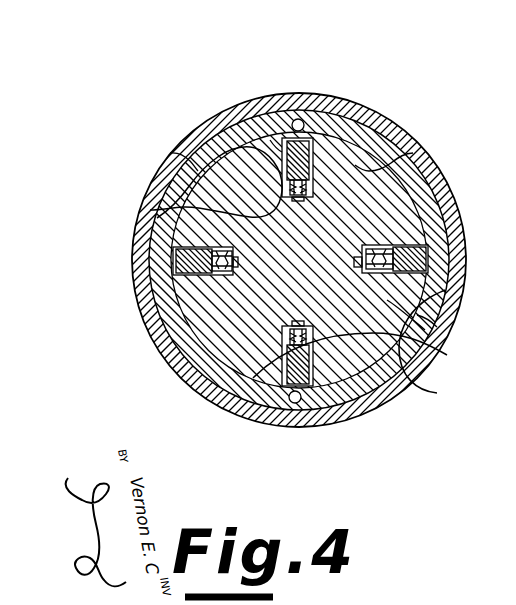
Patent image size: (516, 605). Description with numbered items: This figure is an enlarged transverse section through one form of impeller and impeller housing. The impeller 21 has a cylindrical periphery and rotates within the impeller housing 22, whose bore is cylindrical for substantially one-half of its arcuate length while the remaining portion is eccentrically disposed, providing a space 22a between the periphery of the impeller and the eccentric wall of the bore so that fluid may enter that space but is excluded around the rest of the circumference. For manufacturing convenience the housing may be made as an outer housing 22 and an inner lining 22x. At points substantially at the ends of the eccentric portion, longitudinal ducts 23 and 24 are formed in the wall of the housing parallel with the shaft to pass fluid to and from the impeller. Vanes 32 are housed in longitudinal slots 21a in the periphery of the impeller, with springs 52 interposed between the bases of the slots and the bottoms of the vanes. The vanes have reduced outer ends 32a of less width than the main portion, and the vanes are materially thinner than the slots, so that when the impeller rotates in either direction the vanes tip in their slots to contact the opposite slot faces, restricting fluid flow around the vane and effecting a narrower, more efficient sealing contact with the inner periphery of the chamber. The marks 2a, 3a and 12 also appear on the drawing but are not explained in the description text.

The coupling hub member 2a is at (515, 237).
The coupling member 3a is at (504, 160).
The shaft 12 is at (506, 426).
The inner ring 21 is at (359, 122).
The inner ring portion 21a is at (413, 155).
The outer housing ring 22 is at (317, 98).
The housing ring portion 22a is at (437, 327).
The housing ring portion 22x is at (170, 153).
The upper hole 23 is at (297, 119).
The lower hole 24 is at (298, 400).
The locking pin assembly 32 is at (222, 147).
The pin head 32a is at (270, 140).
The spring wire 52 is at (150, 195).